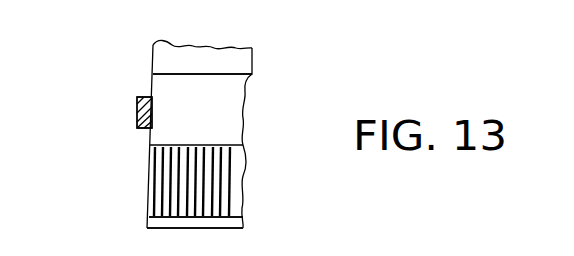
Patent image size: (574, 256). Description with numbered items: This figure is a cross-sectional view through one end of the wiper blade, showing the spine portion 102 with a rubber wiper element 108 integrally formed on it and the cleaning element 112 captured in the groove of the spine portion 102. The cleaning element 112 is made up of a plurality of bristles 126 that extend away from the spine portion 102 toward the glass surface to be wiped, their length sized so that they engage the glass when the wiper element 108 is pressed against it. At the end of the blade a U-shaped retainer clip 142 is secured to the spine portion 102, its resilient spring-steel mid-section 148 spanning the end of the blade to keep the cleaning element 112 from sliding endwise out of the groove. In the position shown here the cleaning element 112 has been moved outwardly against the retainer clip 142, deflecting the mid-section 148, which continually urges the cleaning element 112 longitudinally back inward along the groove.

The spine portion 102 is at (217, 53).
The cleaning element 112 is at (231, 104).
The bristles 126 is at (231, 178).
The retainer clip 142 is at (136, 104).
The mid-section 148 is at (132, 119).
The rubber wiper element 108 is at (150, 222).